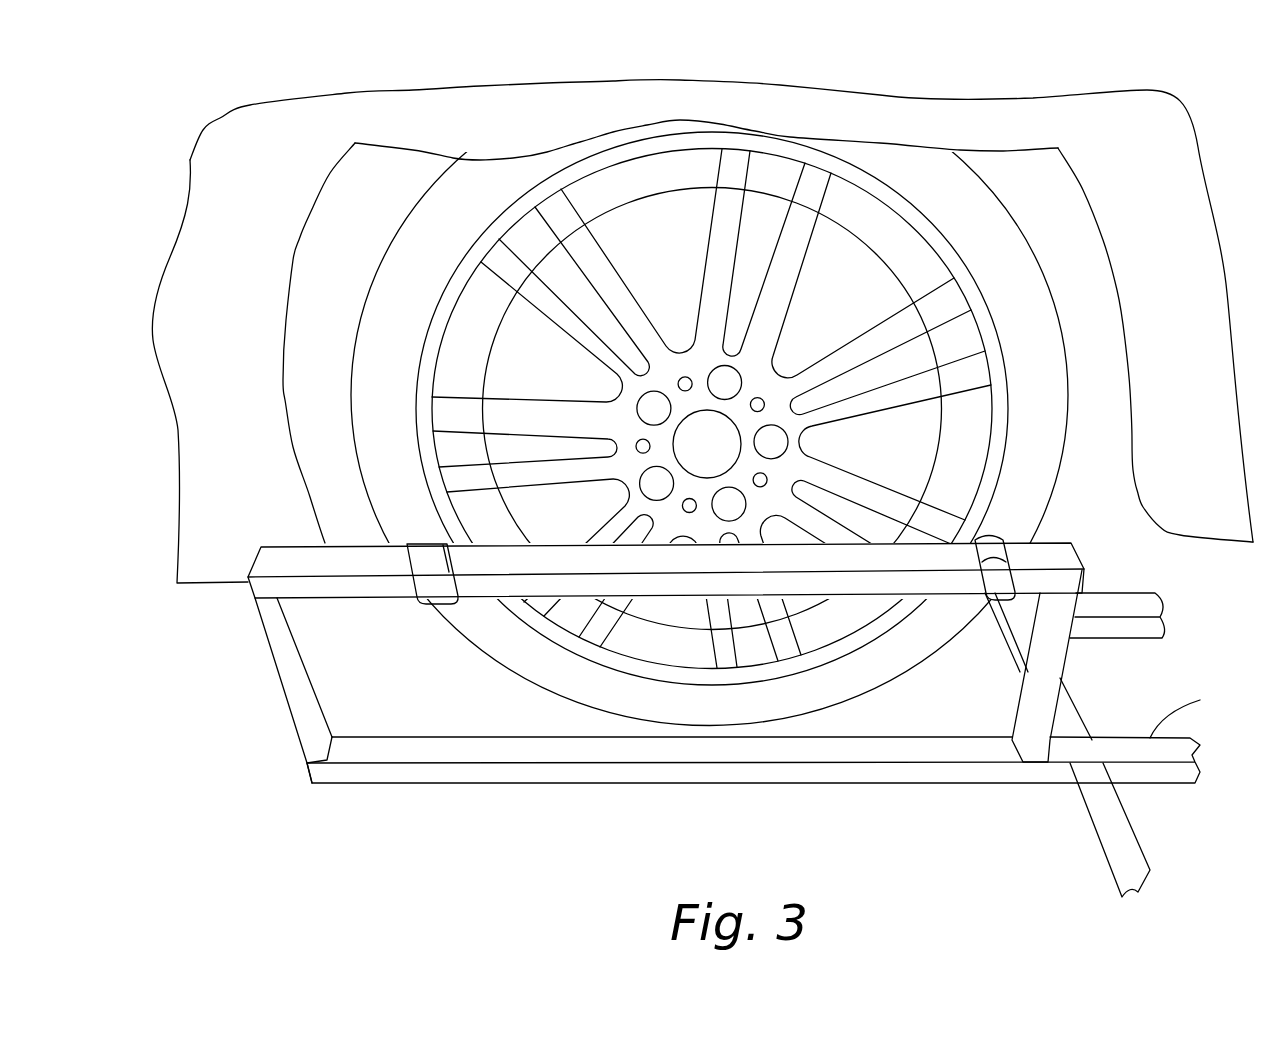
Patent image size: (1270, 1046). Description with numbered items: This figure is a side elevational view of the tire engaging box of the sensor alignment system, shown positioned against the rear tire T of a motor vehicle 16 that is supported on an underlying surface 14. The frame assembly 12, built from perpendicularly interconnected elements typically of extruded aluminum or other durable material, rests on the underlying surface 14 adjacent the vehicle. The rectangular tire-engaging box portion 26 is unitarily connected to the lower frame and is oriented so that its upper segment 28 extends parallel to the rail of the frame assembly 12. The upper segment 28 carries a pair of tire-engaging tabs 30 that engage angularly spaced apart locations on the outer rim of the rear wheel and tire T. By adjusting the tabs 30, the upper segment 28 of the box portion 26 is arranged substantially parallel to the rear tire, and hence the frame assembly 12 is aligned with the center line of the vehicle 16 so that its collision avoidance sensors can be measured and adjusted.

The frame assembly 12 is at (1147, 735).
The underlying surface 14 is at (590, 858).
The motor vehicle 16 is at (303, 217).
The tire-engaging box portion 26 is at (881, 784).
The upper segment 28 is at (292, 560).
The tire-engaging tabs 30 is at (423, 603).
The tire T is at (912, 167).